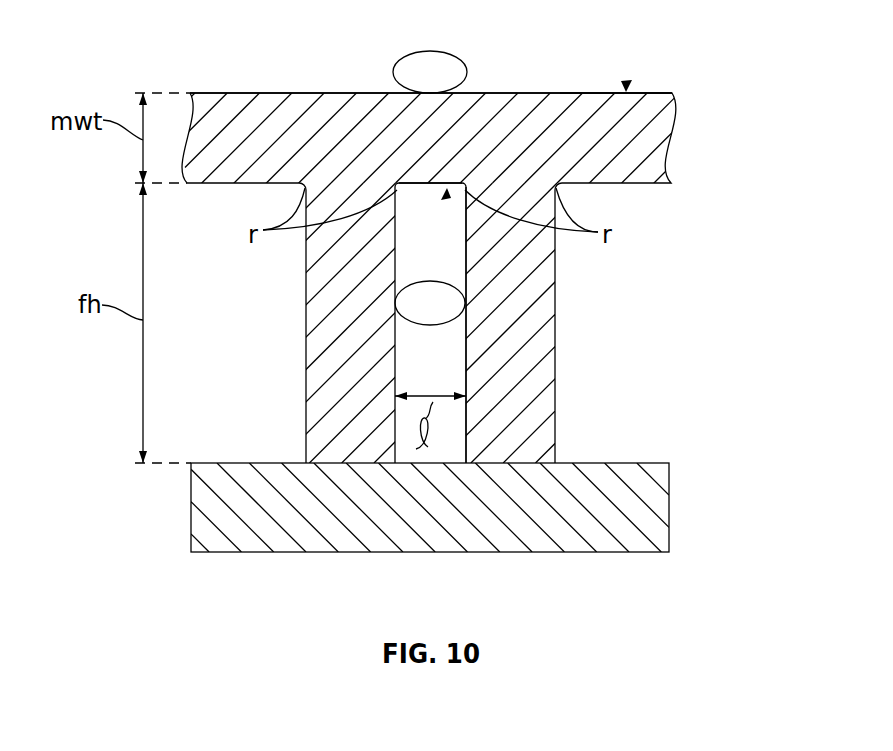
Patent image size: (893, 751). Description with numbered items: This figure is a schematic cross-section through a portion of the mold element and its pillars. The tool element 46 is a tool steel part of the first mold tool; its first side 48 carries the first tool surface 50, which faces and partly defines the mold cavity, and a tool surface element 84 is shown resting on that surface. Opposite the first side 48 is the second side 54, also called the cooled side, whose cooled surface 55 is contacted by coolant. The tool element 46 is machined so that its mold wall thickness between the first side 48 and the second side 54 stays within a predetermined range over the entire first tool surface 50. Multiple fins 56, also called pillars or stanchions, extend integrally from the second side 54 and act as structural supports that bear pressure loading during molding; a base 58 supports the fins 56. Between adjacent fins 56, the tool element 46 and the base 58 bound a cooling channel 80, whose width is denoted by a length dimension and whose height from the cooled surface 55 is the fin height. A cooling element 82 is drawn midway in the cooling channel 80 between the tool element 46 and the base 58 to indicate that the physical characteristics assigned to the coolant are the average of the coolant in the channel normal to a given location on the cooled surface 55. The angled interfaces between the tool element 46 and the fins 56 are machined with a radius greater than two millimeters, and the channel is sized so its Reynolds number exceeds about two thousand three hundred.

The tool element 46 is at (665, 128).
The first side 48 is at (566, 92).
The first tool surface 50 is at (628, 88).
The second side 54 is at (396, 210).
The cooled surface 55 is at (446, 193).
The fins 56 is at (313, 357).
The base 58 is at (662, 508).
The cooling channel 80 is at (452, 224).
The cooling element 82 is at (445, 326).
The tool surface element 84 is at (458, 63).